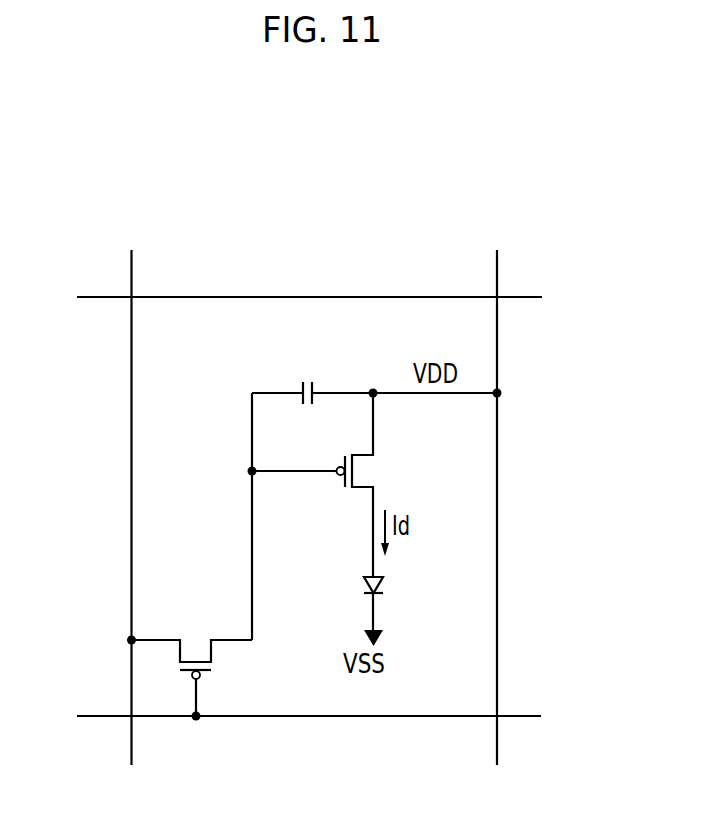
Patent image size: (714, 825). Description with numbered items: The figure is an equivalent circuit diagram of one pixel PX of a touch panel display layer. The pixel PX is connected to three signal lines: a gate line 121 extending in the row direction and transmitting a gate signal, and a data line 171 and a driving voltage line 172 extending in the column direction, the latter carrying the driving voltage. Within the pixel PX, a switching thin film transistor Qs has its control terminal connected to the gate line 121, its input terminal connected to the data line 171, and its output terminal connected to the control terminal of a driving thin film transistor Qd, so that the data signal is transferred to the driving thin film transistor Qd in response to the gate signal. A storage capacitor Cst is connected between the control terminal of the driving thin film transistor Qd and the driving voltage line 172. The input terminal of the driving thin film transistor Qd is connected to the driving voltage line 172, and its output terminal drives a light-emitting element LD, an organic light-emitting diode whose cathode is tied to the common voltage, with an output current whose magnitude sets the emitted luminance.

The data line 171 is at (131, 489).
The driving voltage line 172 is at (496, 489).
The gate line 121 is at (287, 716).
The pixel PX is at (173, 339).
The storage capacitor Cst is at (312, 376).
The driving thin film transistor Qd is at (331, 485).
The switching thin film transistor Qs is at (189, 665).
The light-emitting element LD is at (389, 608).